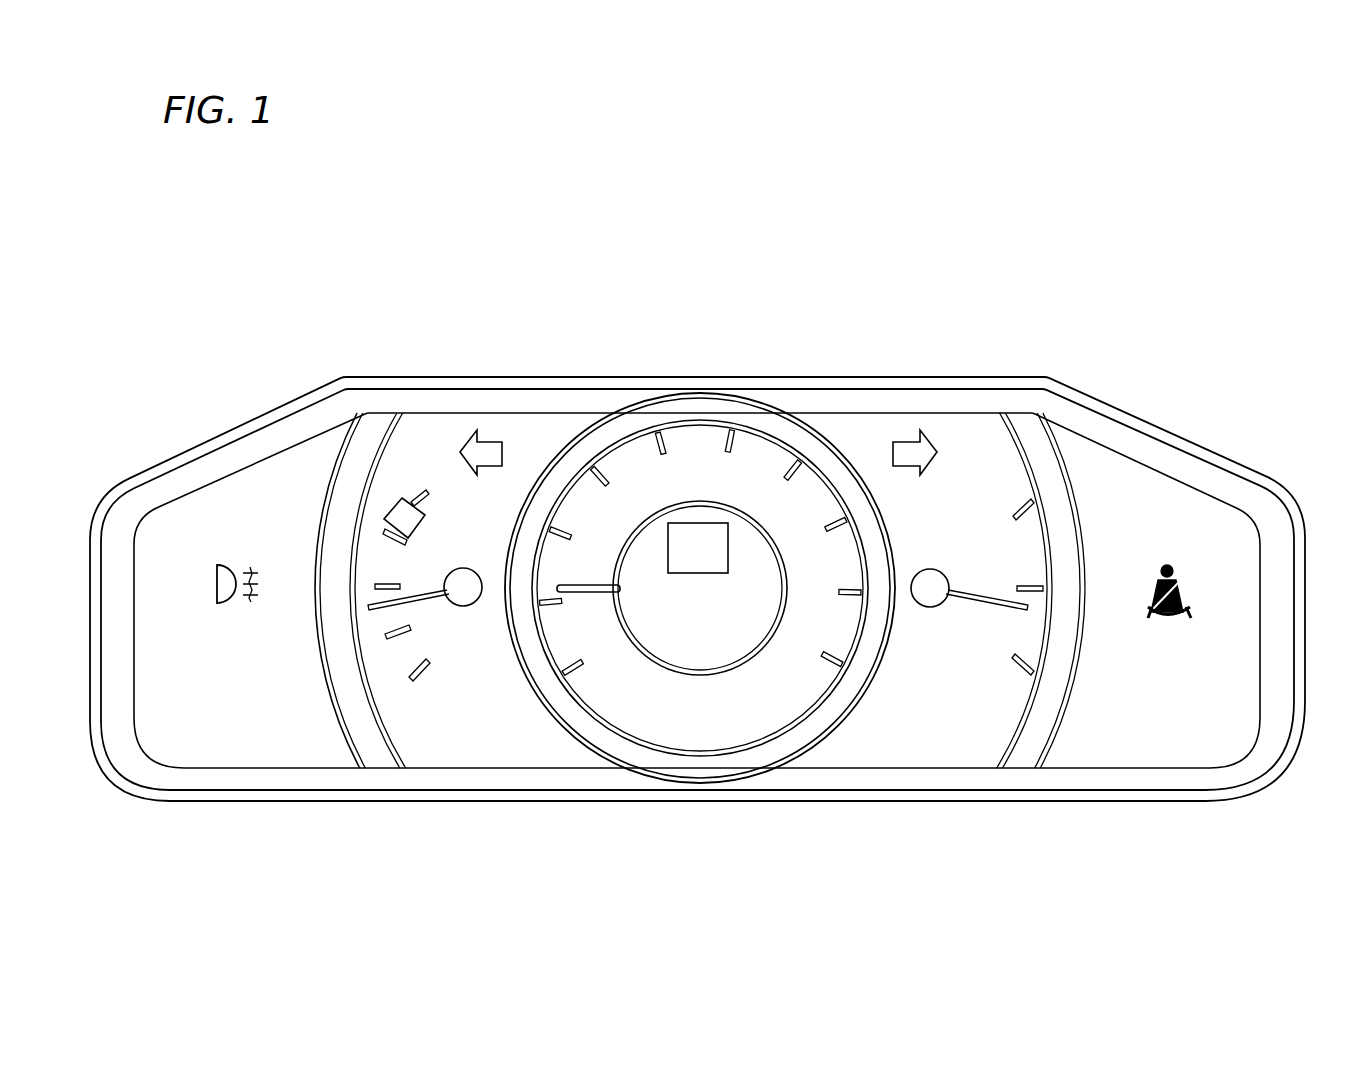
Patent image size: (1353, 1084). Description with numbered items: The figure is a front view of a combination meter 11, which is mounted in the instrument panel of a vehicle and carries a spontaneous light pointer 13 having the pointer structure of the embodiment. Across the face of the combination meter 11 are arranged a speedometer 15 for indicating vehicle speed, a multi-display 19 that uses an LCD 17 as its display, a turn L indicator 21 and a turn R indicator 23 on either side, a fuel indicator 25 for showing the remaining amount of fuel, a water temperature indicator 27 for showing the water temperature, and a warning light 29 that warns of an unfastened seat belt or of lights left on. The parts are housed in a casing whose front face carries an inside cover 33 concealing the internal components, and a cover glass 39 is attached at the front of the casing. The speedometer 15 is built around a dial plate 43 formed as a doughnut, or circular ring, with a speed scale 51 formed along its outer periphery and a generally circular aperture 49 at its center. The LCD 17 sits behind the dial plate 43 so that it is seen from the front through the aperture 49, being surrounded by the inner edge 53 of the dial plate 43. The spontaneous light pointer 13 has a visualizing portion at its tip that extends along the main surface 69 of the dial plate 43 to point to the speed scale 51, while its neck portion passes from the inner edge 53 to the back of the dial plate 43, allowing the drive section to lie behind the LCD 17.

The combination meter 11 is at (136, 386).
The spontaneous light pointer 13 is at (572, 593).
The speedometer 15 is at (705, 378).
The LCD 17 is at (700, 662).
The multi-display 19 is at (731, 668).
The turn L indicator 21 is at (488, 455).
The turn R indicator 23 is at (907, 453).
The fuel indicator 25 is at (942, 500).
The water temperature indicator 27 is at (435, 470).
The warning light 29 is at (217, 563).
The inside cover 33 is at (357, 733).
The cover glass 39 is at (118, 774).
The dial plate 43 is at (775, 462).
The aperture 49 is at (620, 556).
The speed scale 51 is at (590, 515).
The inner edge 53 is at (650, 648).
The main surface 69 is at (552, 647).